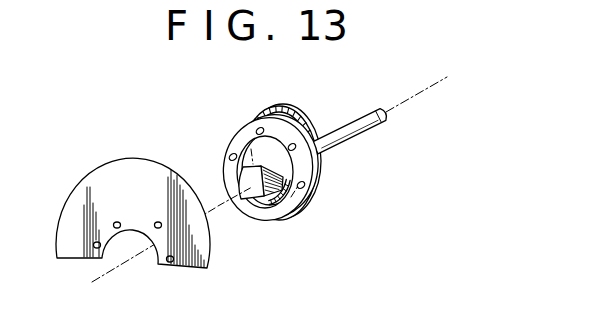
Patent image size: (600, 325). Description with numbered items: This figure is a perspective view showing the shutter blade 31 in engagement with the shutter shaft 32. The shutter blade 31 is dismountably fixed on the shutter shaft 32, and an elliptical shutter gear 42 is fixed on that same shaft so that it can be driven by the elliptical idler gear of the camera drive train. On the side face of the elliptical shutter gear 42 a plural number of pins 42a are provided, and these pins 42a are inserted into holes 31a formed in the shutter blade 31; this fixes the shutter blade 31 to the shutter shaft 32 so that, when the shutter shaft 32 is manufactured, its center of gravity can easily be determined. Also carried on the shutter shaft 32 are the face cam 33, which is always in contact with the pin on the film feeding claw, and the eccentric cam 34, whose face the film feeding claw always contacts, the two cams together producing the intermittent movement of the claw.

The shutter blade 31 is at (115, 173).
The holes 31a is at (170, 262).
The shutter shaft 32 is at (290, 107).
The face cam 33 is at (277, 207).
The eccentric cam 34 is at (253, 192).
The elliptical shutter gear 42 is at (240, 131).
The pins 42a is at (308, 203).